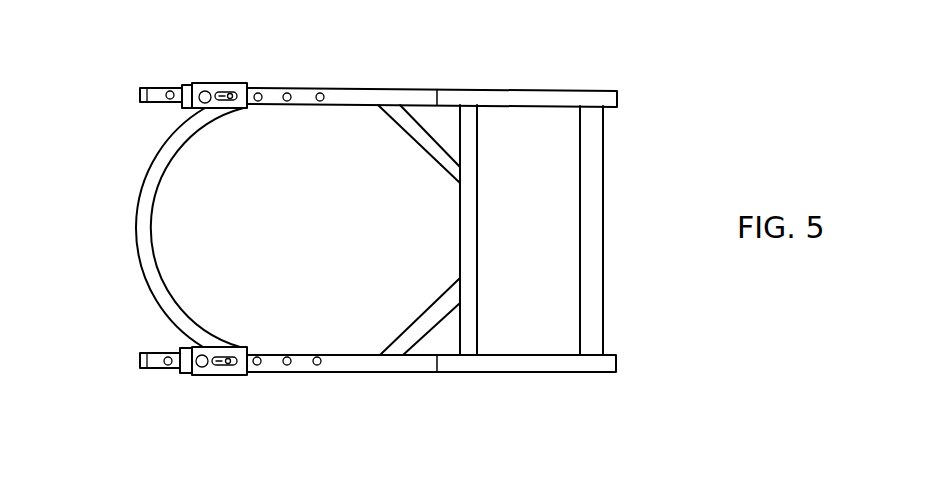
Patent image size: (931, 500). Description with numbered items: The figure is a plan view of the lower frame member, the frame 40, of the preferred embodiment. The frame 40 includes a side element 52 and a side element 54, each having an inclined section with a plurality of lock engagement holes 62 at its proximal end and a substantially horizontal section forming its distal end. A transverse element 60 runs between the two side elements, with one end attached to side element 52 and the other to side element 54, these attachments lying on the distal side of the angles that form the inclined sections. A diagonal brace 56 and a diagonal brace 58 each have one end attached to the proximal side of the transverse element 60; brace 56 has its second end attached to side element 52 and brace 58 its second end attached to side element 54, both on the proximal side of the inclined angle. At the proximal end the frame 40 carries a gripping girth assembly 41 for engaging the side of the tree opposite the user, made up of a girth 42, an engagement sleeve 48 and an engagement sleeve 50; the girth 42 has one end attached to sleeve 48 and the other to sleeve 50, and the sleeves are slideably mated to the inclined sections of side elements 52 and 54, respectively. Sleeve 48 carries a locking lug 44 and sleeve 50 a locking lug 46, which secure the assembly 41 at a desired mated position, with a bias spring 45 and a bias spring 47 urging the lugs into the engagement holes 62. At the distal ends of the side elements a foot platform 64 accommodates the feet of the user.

The frame 40 is at (486, 230).
The gripping girth assembly 41 is at (231, 111).
The girth 42 is at (132, 220).
The locking lug 44 is at (202, 368).
The bias spring 45 is at (217, 365).
The locking lug 46 is at (208, 91).
The bias spring 47 is at (268, 69).
The engagement sleeve 48 is at (221, 402).
The engagement sleeve 50 is at (237, 108).
The side element 52 is at (425, 373).
The side element 54 is at (522, 88).
The diagonal brace 56 is at (428, 303).
The diagonal brace 58 is at (408, 142).
The transverse element 60 is at (480, 227).
The lock engagement holes 62 is at (250, 158).
The foot platform 64 is at (607, 212).